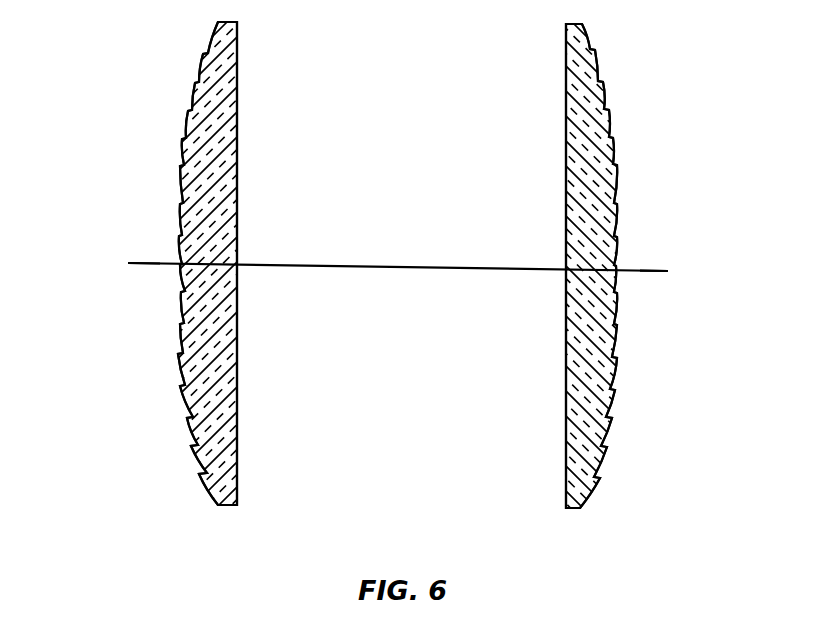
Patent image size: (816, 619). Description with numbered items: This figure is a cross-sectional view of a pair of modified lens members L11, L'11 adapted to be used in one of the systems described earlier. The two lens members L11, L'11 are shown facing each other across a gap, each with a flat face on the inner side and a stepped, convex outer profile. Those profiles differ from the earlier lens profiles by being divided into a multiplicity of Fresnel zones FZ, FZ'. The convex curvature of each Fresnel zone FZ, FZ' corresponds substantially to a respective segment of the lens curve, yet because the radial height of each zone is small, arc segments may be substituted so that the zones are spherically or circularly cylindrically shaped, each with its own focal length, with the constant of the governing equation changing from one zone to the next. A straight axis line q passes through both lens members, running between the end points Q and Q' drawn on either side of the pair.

The lens member L11 is at (233, 405).
The lens member L'11 is at (433, 300).
The Fresnel zones FZ is at (146, 263).
The Fresnel zones FZ' is at (645, 266).
The optical axis q is at (417, 268).
The axis end point Q is at (128, 275).
The axis end point Q' is at (667, 282).